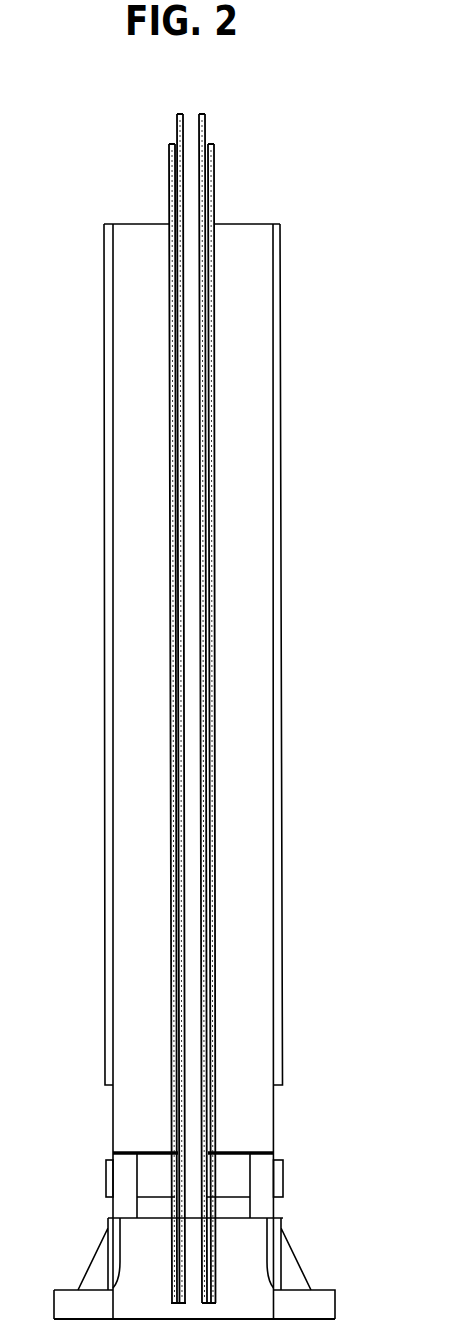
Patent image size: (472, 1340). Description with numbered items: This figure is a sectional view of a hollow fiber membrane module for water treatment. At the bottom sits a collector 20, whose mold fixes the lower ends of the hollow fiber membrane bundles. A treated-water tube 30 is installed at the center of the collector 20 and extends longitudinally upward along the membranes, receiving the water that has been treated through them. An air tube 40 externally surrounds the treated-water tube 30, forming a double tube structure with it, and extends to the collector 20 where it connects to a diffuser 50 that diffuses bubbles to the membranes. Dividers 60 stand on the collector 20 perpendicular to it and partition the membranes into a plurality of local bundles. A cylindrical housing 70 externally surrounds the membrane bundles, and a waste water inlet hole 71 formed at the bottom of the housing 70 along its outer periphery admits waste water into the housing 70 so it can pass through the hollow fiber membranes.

The collector 20 is at (281, 1252).
The treated-water tube 30 is at (204, 118).
The air tube 40 is at (213, 164).
The diffuser 50 is at (150, 1182).
The dividers 60 is at (252, 330).
The housing 70 is at (276, 453).
The waste water inlet hole 71 is at (274, 1110).